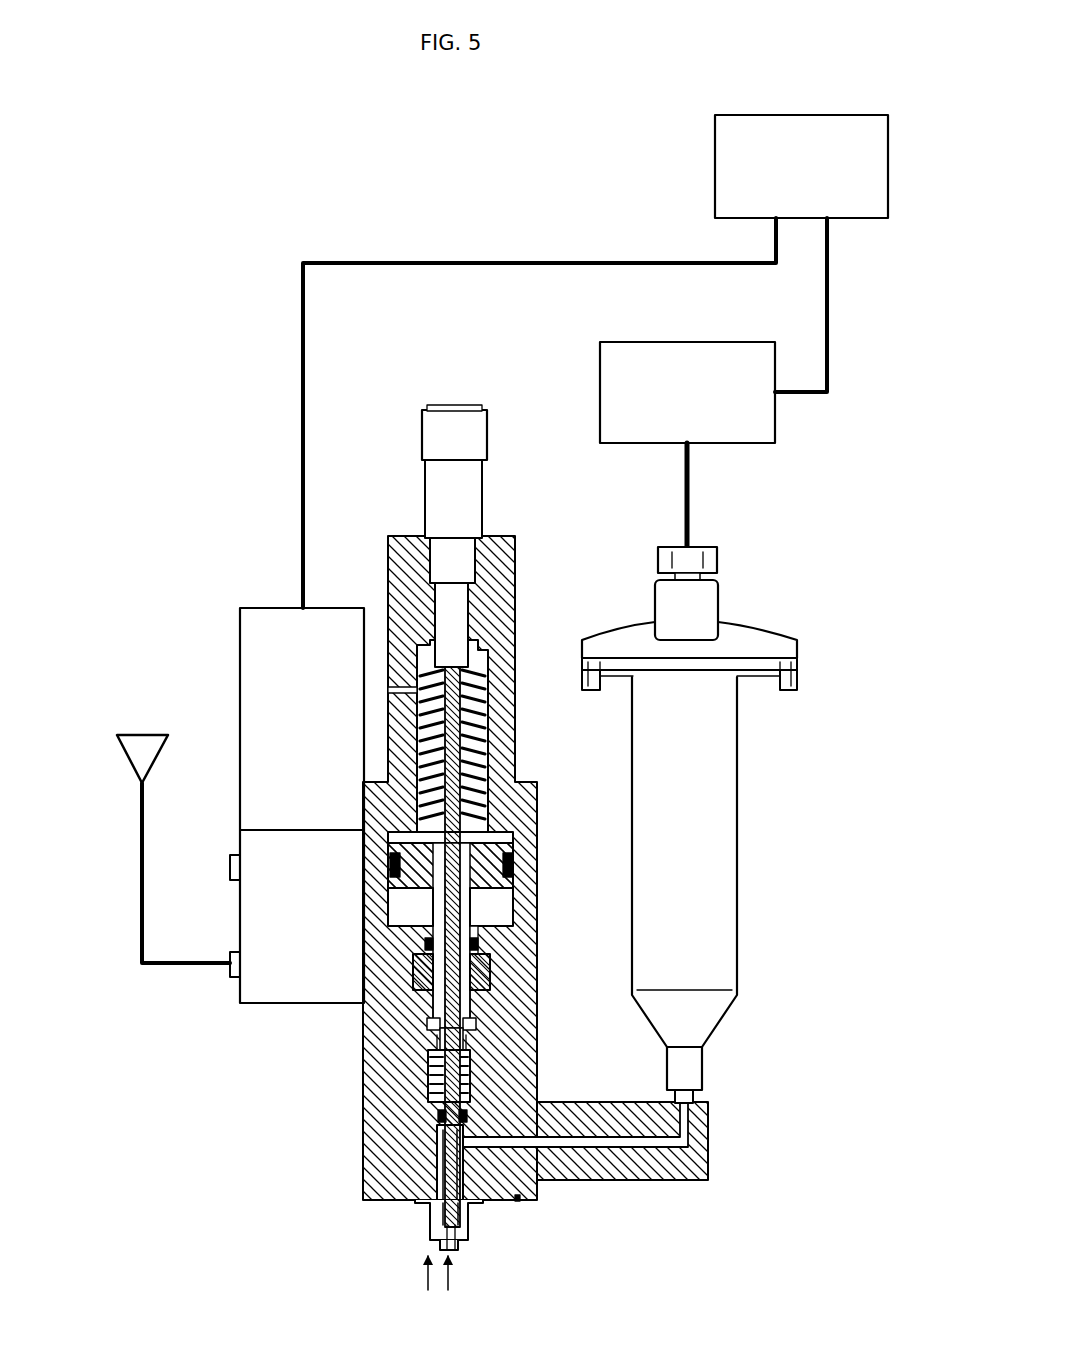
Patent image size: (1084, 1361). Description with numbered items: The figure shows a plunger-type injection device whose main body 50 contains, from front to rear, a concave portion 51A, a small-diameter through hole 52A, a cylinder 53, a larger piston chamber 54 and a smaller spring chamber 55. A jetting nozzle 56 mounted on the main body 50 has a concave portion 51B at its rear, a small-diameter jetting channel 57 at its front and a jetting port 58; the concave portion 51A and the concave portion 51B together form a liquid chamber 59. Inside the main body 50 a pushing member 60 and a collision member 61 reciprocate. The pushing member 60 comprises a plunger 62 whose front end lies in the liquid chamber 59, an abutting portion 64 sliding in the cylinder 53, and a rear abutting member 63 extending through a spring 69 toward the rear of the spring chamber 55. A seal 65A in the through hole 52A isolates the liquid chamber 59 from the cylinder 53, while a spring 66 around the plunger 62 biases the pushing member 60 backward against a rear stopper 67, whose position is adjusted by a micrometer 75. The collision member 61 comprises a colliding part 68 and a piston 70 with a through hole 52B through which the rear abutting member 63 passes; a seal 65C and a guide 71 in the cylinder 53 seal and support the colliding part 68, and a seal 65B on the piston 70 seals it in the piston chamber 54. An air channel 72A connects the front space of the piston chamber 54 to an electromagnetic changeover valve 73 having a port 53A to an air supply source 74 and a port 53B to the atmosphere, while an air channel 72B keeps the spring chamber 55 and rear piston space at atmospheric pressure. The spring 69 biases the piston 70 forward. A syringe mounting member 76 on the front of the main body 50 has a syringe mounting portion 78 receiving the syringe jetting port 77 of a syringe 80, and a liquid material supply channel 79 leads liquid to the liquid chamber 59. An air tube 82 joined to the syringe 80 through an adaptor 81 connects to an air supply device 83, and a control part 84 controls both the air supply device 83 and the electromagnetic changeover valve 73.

The main body 50 is at (410, 548).
The concave portion 51A is at (438, 1176).
The concave portion 51B is at (432, 1213).
The through hole 52A is at (440, 1114).
The through hole 52B is at (478, 942).
The cylinder 53 is at (476, 1025).
The port 53A is at (232, 977).
The port 53B is at (230, 867).
The piston chamber 54 is at (513, 888).
The spring chamber 55 is at (478, 655).
The jetting nozzle 56 is at (428, 1288).
The jetting channel 57 is at (462, 1247).
The jetting port 58 is at (448, 1288).
The liquid chamber 59 is at (440, 1140).
The pushing member 60 is at (438, 1022).
The collision member 61 is at (480, 912).
The plunger 62 is at (458, 1220).
The rear abutting member 63 is at (452, 705).
The abutting portion 64 is at (436, 1050).
The seal 65A is at (522, 1198).
The seal 65B is at (390, 866).
The seal 65C is at (428, 944).
The spring 66 is at (470, 1080).
The rear stopper 67 is at (462, 600).
The colliding part 68 is at (470, 1000).
The spring 69 is at (470, 748).
The piston 70 is at (513, 840).
The guide 71 is at (490, 970).
The air channel 72A is at (388, 912).
The air channel 72B is at (392, 690).
The electromagnetic changeover valve 73 is at (252, 702).
The air supply source 74 is at (142, 745).
The micrometer 75 is at (470, 500).
The syringe mounting member 76 is at (690, 1182).
The syringe jetting port 77 is at (702, 1075).
The syringe mounting portion 78 is at (695, 1097).
The liquid material supply channel 79 is at (592, 1150).
The syringe 80 is at (726, 855).
The adaptor 81 is at (748, 632).
The air tube 82 is at (690, 497).
The air supply device 83 is at (600, 392).
The control part 84 is at (715, 165).